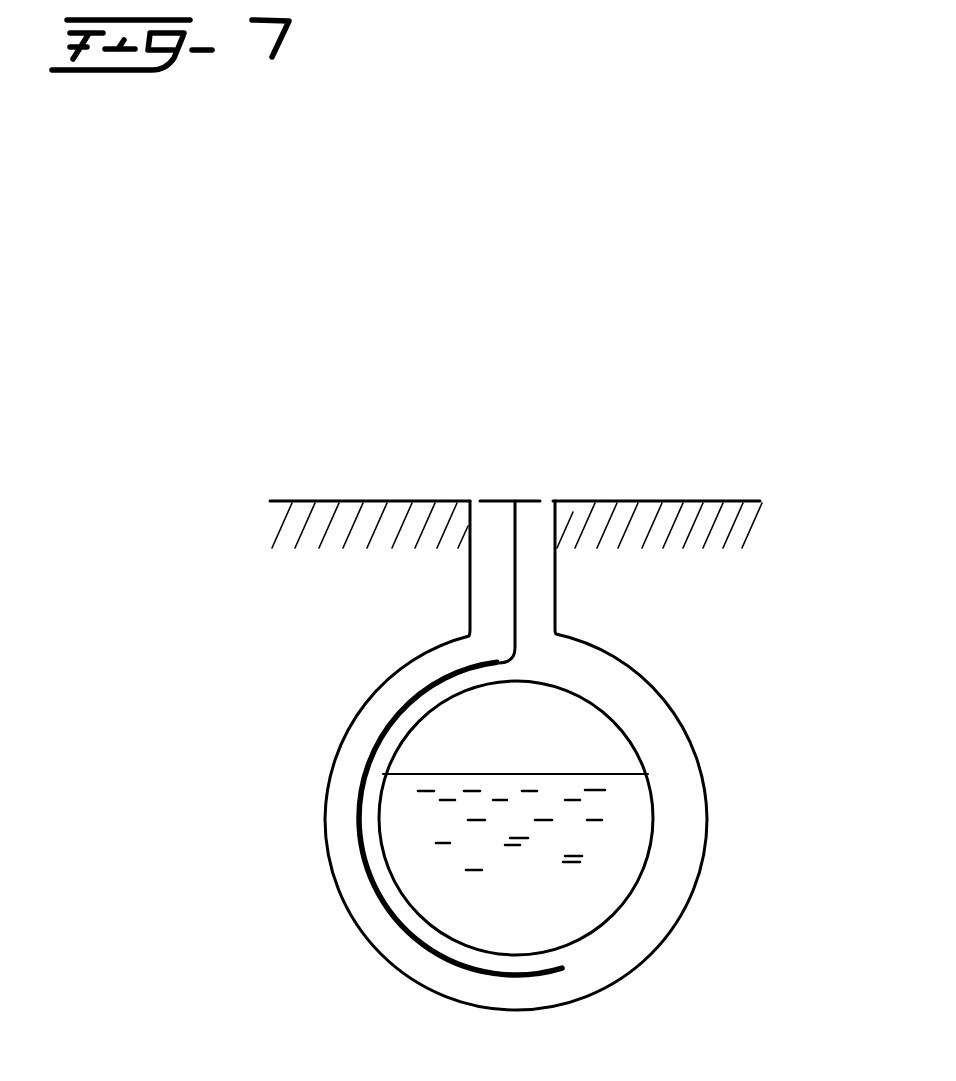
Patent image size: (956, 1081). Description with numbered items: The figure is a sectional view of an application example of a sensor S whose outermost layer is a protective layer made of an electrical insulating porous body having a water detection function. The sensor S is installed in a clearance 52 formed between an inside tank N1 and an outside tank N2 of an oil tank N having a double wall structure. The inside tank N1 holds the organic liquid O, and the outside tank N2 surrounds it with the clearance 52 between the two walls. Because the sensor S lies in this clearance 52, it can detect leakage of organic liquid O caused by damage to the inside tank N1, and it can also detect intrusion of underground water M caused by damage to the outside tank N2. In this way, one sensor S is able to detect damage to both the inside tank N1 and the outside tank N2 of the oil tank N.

The oil tank N is at (528, 755).
The inside tank N1 is at (647, 868).
The outside tank N2 is at (672, 701).
The clearance 52 is at (677, 789).
The sensor S is at (357, 794).
The underground water M is at (372, 905).
The organic liquid O is at (595, 968).